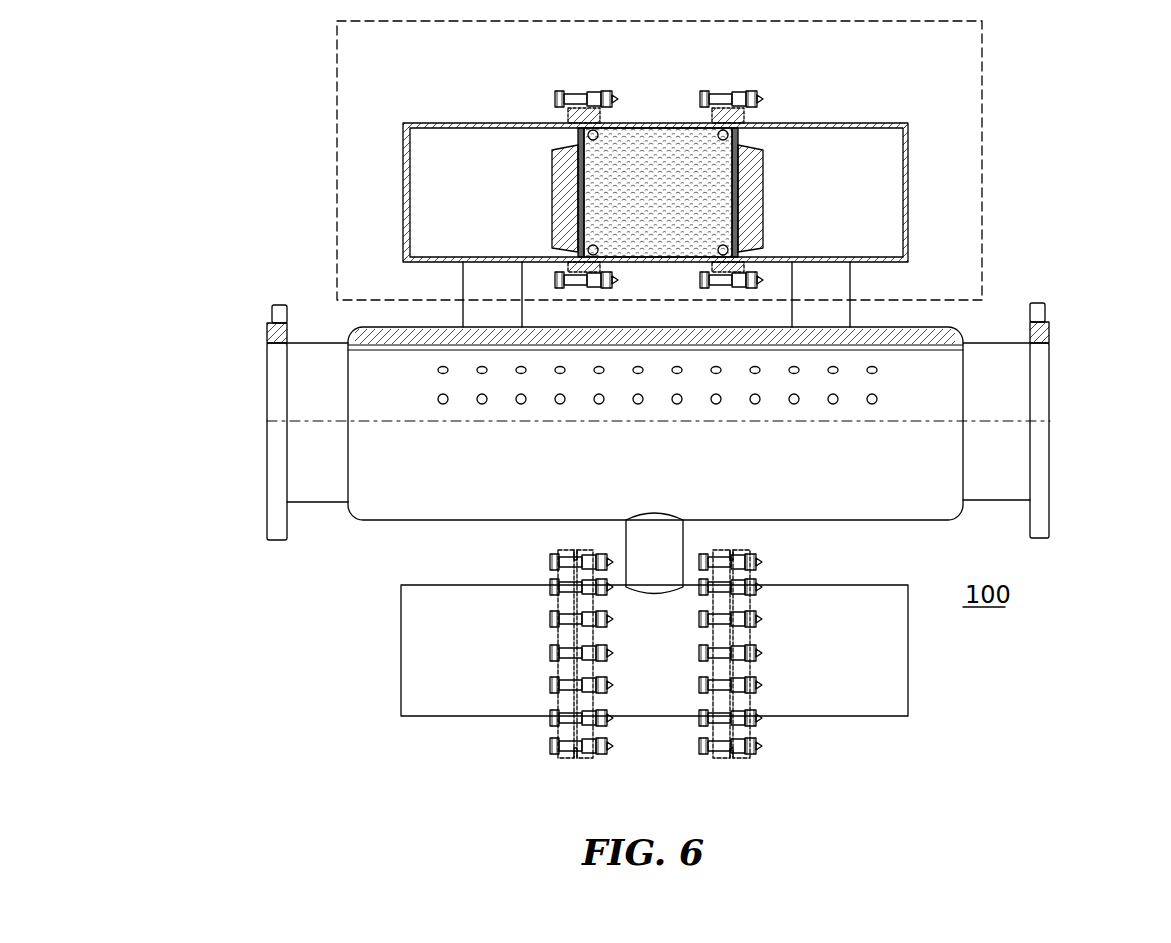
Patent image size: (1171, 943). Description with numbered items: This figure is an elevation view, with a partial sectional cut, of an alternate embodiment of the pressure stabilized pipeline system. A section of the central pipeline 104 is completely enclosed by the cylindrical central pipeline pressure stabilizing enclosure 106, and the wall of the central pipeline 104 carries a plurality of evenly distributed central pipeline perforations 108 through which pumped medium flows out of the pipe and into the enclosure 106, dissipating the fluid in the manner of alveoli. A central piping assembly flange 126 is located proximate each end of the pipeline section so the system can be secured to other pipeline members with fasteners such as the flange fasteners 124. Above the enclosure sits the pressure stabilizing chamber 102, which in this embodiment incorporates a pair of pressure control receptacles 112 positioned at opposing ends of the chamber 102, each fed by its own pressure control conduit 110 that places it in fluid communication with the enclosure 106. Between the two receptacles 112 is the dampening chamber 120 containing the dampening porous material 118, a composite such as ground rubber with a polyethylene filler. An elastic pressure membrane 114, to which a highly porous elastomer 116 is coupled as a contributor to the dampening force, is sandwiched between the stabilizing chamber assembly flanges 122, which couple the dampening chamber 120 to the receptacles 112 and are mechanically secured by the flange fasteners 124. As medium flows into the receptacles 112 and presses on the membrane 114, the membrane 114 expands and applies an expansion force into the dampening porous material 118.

The pressure stabilizing chamber 102 is at (982, 165).
The central pipeline 104 is at (327, 488).
The cylindrical central pipeline pressure stabilizing enclosure 106 is at (452, 503).
The central pipeline perforations 108 is at (481, 405).
The pressure control conduit 110 is at (487, 288).
The pressure control receptacle 112 is at (445, 150).
The elastic pressure membrane 114 is at (762, 180).
The highly porous elastomer 116 is at (750, 202).
The dampening porous material 118 is at (672, 143).
The dampening chamber 120 is at (627, 122).
The stabilizing chamber assembly flange 122 is at (572, 92).
The flange fastener 124 is at (762, 92).
The central piping assembly flange 126 is at (277, 458).